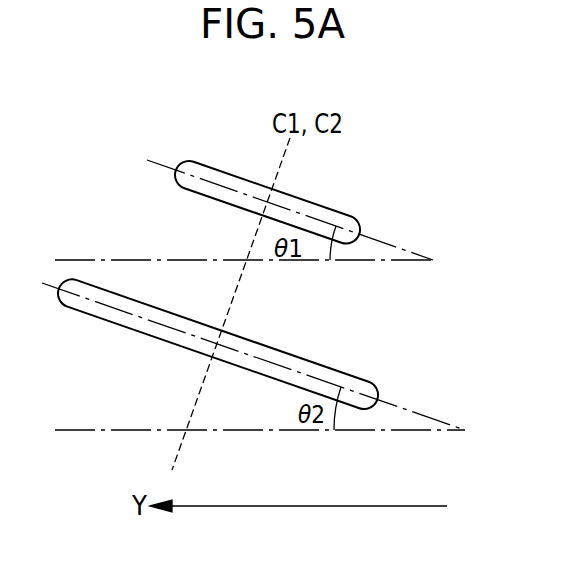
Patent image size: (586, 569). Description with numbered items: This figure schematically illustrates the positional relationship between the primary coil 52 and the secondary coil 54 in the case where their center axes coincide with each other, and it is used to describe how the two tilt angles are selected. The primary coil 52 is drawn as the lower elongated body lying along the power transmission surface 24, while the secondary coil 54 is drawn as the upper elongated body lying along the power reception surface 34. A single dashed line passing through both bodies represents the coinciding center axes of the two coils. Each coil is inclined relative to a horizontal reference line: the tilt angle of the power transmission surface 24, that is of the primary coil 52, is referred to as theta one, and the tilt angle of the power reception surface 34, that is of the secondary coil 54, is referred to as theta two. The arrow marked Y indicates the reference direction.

The power transmission surface 24 is at (253, 353).
The primary coil 52 is at (137, 330).
The power reception surface 34 is at (215, 200).
The secondary coil 54 is at (290, 185).